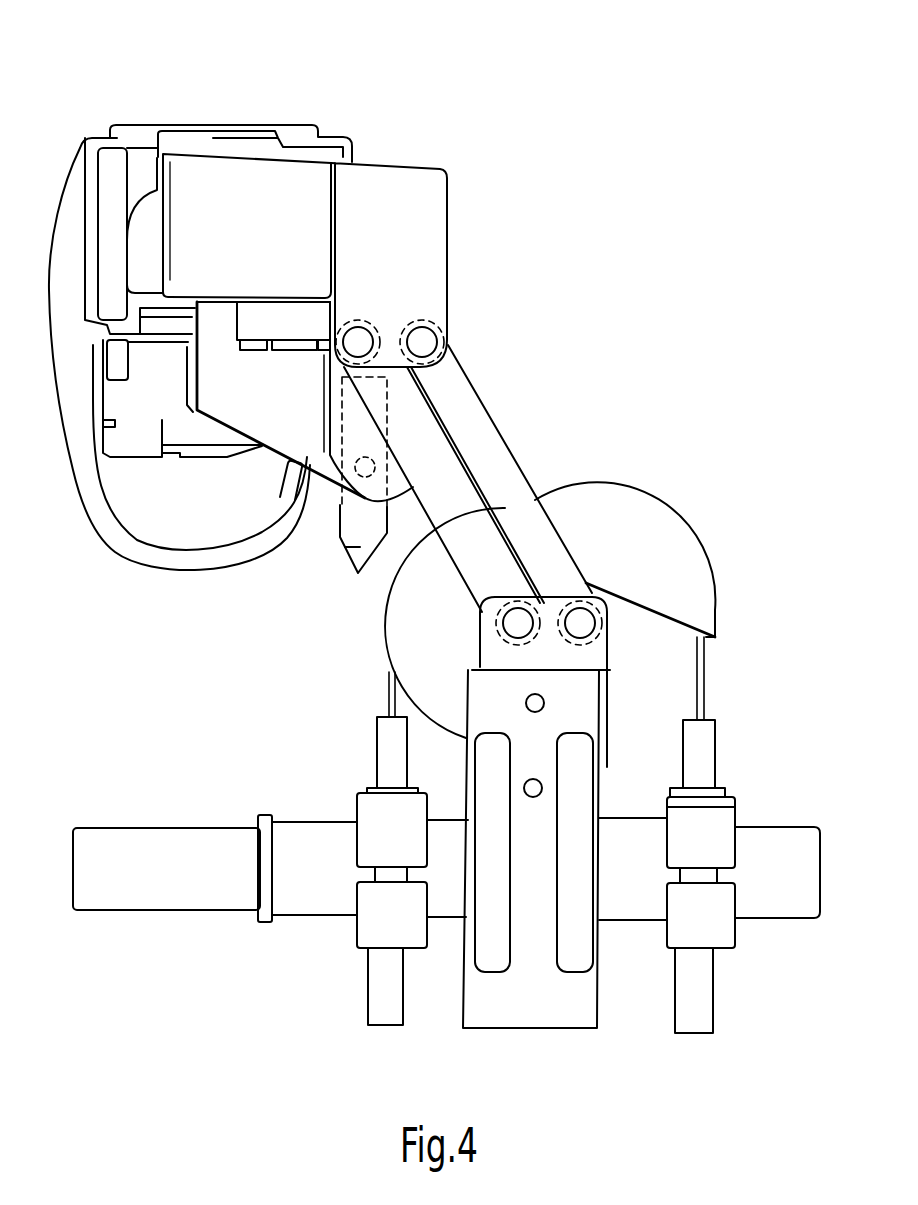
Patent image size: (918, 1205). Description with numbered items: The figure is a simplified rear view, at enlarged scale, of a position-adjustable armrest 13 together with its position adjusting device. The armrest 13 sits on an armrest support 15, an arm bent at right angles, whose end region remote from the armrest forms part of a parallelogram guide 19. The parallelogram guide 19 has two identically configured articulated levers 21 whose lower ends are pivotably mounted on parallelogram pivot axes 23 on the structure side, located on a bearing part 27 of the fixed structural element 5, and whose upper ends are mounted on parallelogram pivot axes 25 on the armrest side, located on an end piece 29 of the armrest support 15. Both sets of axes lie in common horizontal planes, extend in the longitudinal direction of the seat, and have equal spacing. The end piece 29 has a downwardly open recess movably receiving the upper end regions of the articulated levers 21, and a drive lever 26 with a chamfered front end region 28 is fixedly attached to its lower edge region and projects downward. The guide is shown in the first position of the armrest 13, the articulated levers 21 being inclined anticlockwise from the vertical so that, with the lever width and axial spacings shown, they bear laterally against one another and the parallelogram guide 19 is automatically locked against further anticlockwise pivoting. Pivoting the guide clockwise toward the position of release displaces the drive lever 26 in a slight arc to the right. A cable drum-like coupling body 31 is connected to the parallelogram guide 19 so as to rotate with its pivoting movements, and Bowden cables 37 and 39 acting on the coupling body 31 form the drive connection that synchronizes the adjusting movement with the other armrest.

The fixed structural element 5 is at (547, 935).
The position-adjustable armrest 13 is at (132, 125).
The armrest support 15 is at (387, 168).
The parallelogram guide 19 is at (605, 442).
The articulated levers 21 is at (487, 467).
The parallelogram pivot axes on the structure side 23 is at (580, 620).
The parallelogram pivot axes on the armrest side 25 is at (420, 343).
The drive lever 26 is at (360, 508).
The bearing part 27 is at (593, 658).
The front end region 28 is at (357, 545).
The end piece 29 is at (428, 222).
The coupling body 31 is at (422, 600).
The Bowden cable 37 is at (390, 987).
The Bowden cable 39 is at (697, 995).